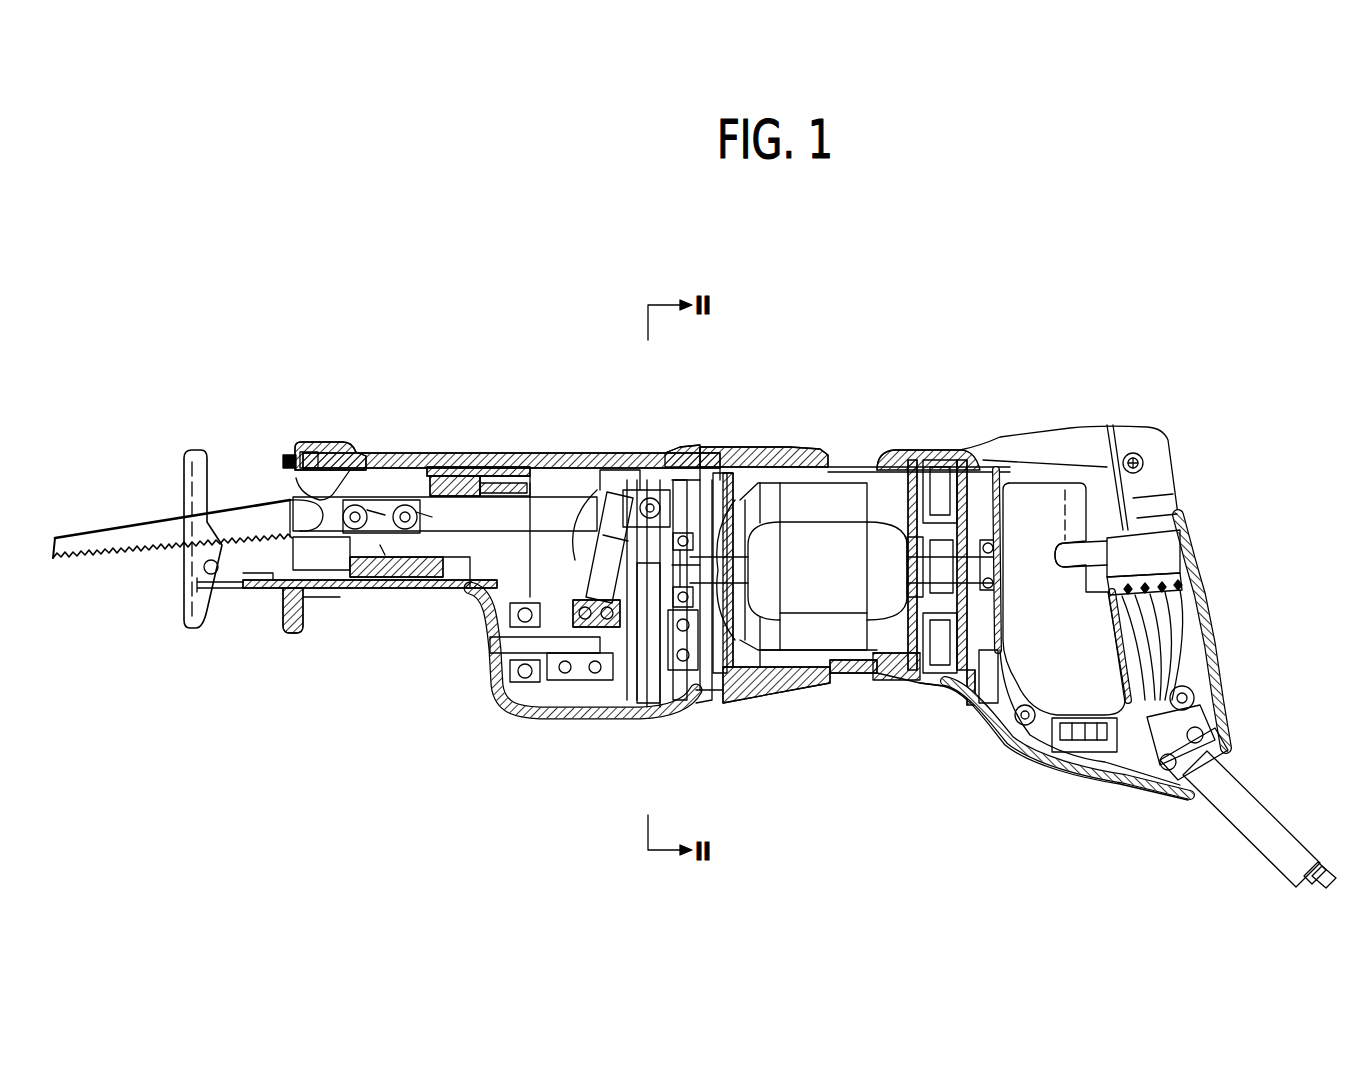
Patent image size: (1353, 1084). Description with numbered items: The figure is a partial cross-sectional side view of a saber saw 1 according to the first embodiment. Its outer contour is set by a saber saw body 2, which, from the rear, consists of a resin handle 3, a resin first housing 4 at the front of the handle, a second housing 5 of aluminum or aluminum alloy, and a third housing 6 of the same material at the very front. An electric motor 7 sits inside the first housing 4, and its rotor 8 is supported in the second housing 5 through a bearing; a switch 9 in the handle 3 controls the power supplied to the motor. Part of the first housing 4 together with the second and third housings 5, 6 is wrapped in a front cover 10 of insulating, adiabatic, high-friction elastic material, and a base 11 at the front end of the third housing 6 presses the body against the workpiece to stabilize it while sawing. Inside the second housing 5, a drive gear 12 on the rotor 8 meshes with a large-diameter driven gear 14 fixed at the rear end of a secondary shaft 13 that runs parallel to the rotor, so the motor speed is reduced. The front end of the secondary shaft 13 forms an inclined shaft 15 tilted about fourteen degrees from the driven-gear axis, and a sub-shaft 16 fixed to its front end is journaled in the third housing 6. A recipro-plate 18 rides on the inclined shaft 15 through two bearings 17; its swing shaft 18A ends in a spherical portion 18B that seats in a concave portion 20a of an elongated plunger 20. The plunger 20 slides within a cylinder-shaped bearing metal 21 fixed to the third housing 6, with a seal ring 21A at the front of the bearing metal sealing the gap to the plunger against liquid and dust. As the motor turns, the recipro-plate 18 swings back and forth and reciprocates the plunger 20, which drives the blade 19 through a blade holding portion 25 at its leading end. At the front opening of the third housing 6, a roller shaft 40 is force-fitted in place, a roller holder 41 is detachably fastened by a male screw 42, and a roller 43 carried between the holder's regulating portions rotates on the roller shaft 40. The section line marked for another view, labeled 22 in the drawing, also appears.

The saber saw 1 is at (880, 325).
The saber saw body 2 is at (858, 455).
The handle 3 is at (1205, 553).
The first housing 4 is at (836, 466).
The second housing 5 is at (688, 453).
The third housing 6 is at (500, 454).
The electric motor 7 is at (838, 640).
The rotor 8 is at (718, 453).
The switch 9 is at (1165, 522).
The front cover 10 is at (525, 495).
The base 11 is at (192, 452).
The drive gear 12 is at (684, 712).
The secondary shaft 13 is at (622, 714).
The driven gear 14 is at (655, 714).
The inclined shaft 15 is at (582, 713).
The sub-shaft 16 is at (530, 713).
The bearings 17 is at (563, 715).
The recipro-plate 18 is at (584, 490).
The swing shaft 18A is at (600, 715).
The spherical portion 18B is at (633, 490).
The blade 19 is at (240, 500).
The plunger 20 is at (570, 455).
The concave portion 20a is at (610, 490).
The bearing metal 21 is at (462, 455).
The seal ring 21A is at (426, 455).
The counter weight 22 is at (650, 470).
The blade holding portion 25 is at (385, 553).
The roller shaft 40 is at (318, 447).
The roller holder 41 is at (303, 448).
The male screw 42 is at (280, 456).
The roller 43 is at (350, 455).